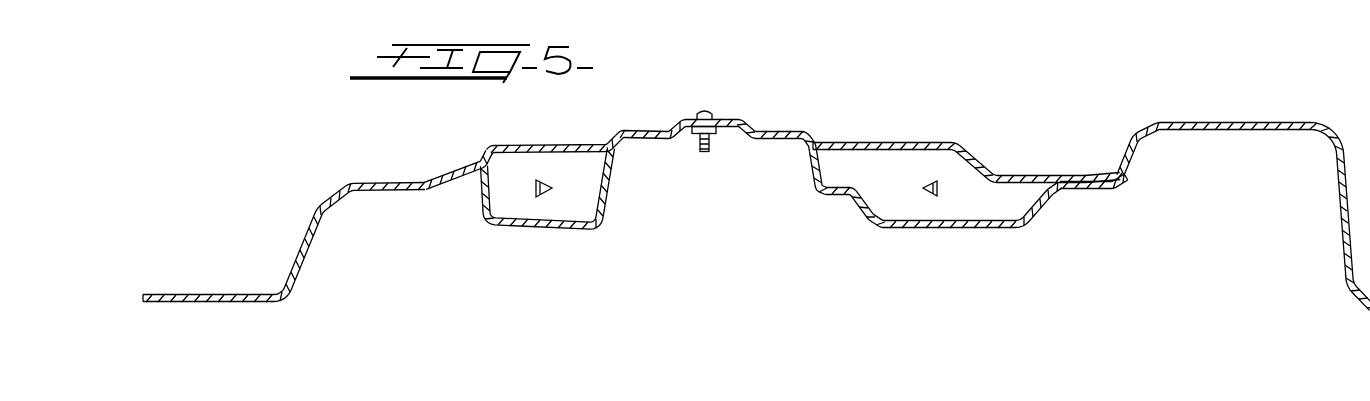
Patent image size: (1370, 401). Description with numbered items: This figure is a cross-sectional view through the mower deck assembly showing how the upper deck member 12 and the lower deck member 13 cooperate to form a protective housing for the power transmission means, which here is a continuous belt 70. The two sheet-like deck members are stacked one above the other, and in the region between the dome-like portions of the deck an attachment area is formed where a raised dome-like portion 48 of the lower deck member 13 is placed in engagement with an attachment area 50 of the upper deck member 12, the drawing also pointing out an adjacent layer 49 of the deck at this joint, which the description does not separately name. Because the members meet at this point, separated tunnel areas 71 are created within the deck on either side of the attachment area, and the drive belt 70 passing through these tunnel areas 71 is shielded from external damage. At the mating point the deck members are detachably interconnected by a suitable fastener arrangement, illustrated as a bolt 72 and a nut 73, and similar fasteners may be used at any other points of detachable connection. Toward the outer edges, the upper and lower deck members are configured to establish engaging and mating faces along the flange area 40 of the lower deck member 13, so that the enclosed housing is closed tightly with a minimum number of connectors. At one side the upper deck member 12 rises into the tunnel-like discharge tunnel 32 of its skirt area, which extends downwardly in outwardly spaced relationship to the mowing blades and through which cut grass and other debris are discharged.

The upper deck member 12 is at (886, 141).
The lower deck member 13 is at (983, 227).
The discharge tunnel 32 is at (1274, 123).
The flange area 40 is at (440, 193).
The raised dome-like portion 48 is at (782, 140).
The lower layer 49 is at (687, 139).
The attachment area 50 is at (688, 117).
The continuous belt 70 is at (535, 190).
The tunnel areas 71 is at (594, 178).
The bolt 72 is at (708, 113).
The nut 73 is at (717, 134).